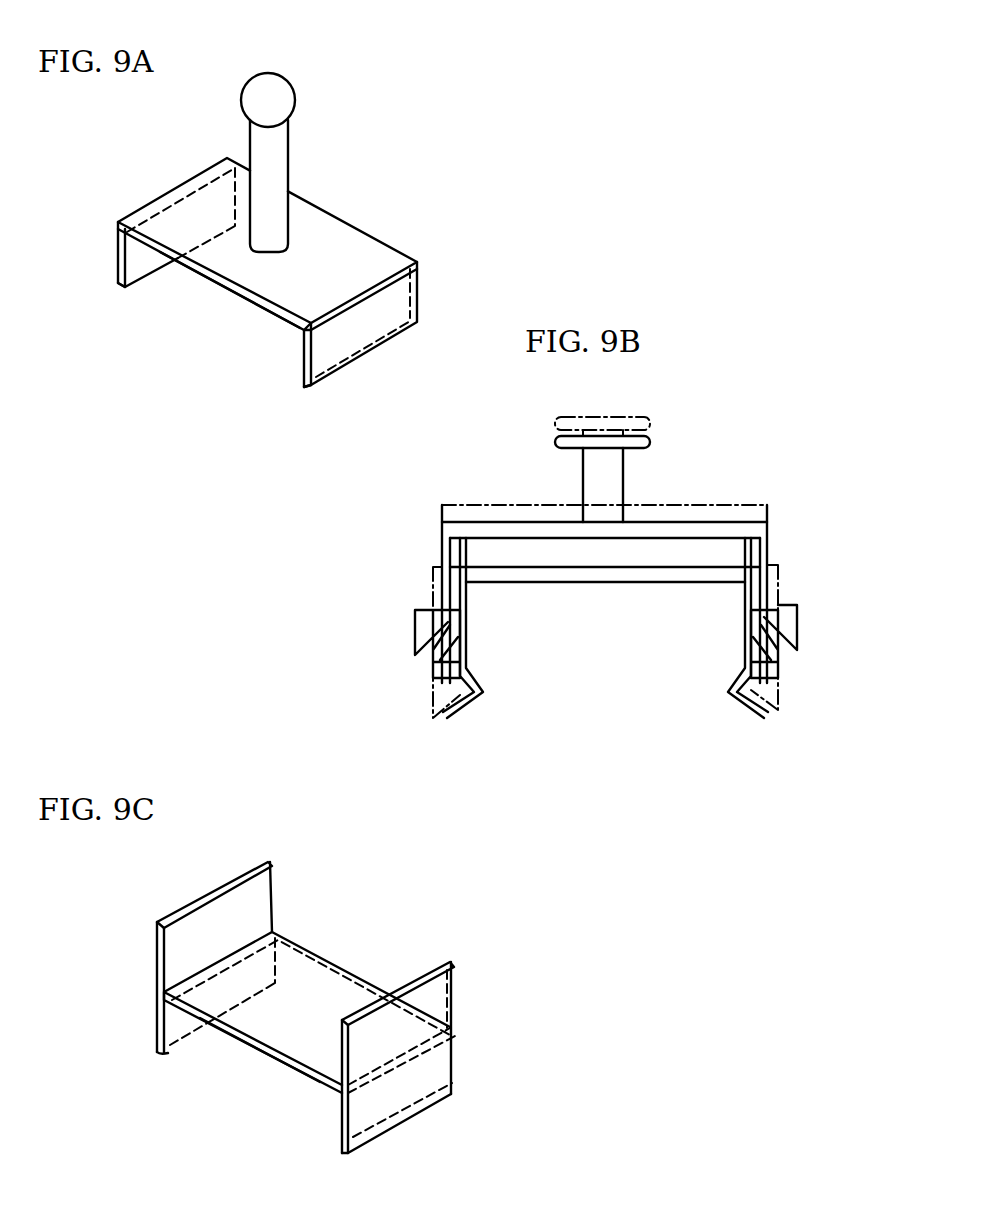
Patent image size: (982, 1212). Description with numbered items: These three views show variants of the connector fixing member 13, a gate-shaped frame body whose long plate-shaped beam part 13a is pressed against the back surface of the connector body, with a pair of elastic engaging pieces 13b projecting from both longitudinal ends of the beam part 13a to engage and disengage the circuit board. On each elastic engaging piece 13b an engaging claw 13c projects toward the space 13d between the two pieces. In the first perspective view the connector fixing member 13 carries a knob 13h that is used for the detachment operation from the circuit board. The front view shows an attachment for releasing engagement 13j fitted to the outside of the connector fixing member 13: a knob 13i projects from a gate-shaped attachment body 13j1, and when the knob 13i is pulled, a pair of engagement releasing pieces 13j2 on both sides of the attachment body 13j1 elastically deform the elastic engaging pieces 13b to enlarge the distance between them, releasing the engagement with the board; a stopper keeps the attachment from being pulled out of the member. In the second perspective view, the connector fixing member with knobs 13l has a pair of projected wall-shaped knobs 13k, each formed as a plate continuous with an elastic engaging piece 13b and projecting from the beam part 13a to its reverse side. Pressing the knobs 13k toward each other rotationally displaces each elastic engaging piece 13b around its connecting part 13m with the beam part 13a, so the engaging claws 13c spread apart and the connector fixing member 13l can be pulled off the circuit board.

In FIG. 9A, the connector fixing member 13 is at (388, 238).
In FIG. 9B, the connector fixing member 13 is at (446, 716).
In FIG. 9C, the connector fixing member 13 is at (306, 1002).
In FIG. 9A, the beam part 13a is at (325, 210).
In FIG. 9B, the beam part 13a is at (595, 584).
In FIG. 9C, the beam part 13a is at (341, 966).
In FIG. 9A, the elastic engaging piece 13b is at (118, 250).
In FIG. 9B, the elastic engaging piece 13b is at (468, 635).
In FIG. 9C, the elastic engaging piece 13b is at (157, 1010).
In FIG. 9A, the engaging claw 13c is at (155, 287).
In FIG. 9C, the engaging claw 13c is at (170, 1058).
In FIG. 9A, the space 13d is at (225, 308).
In FIG. 9C, the space 13d is at (262, 1078).
In FIG. 9A, the knob 13h is at (296, 93).
In FIG. 9B, the knob 13i is at (637, 417).
In FIG. 9B, the attachment for releasing engagement 13j is at (770, 521).
In FIG. 9B, the gate-shaped attachment body 13j1 is at (690, 520).
In FIG. 9B, the engagement releasing piece 13j2 is at (442, 555).
In FIG. 9C, the projected wall-shaped knob 13k is at (259, 861).
In FIG. 9C, the connector fixing member with knobs 13l is at (462, 964).
In FIG. 9C, the connecting part 13m is at (160, 975).